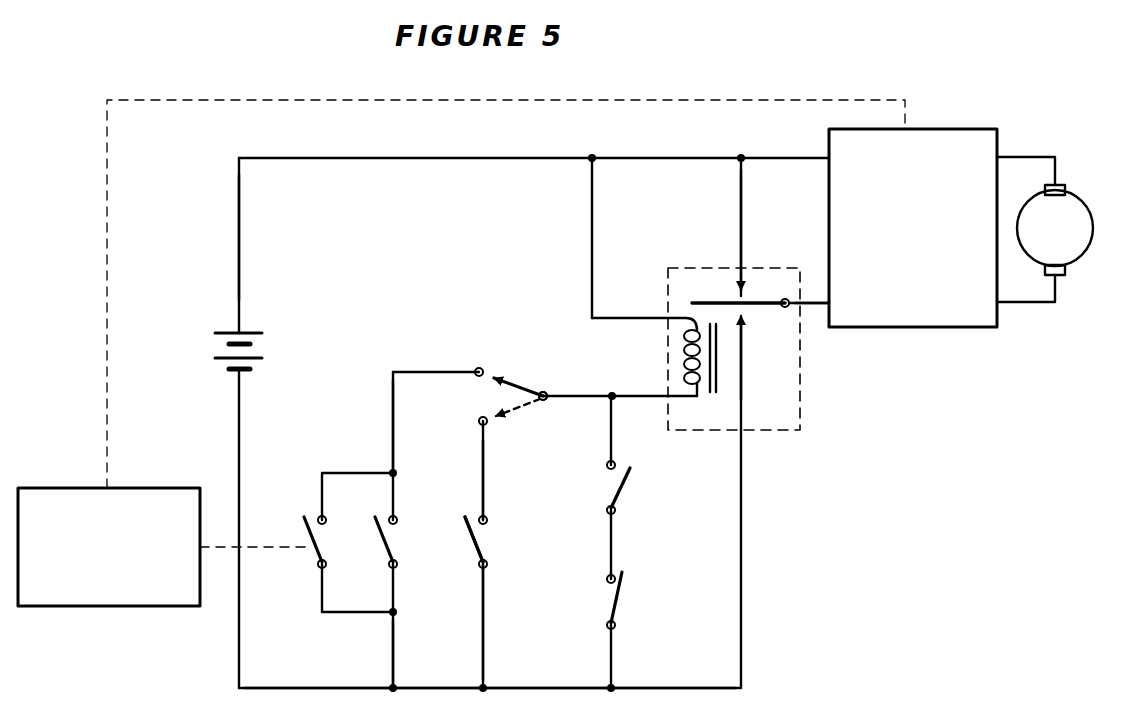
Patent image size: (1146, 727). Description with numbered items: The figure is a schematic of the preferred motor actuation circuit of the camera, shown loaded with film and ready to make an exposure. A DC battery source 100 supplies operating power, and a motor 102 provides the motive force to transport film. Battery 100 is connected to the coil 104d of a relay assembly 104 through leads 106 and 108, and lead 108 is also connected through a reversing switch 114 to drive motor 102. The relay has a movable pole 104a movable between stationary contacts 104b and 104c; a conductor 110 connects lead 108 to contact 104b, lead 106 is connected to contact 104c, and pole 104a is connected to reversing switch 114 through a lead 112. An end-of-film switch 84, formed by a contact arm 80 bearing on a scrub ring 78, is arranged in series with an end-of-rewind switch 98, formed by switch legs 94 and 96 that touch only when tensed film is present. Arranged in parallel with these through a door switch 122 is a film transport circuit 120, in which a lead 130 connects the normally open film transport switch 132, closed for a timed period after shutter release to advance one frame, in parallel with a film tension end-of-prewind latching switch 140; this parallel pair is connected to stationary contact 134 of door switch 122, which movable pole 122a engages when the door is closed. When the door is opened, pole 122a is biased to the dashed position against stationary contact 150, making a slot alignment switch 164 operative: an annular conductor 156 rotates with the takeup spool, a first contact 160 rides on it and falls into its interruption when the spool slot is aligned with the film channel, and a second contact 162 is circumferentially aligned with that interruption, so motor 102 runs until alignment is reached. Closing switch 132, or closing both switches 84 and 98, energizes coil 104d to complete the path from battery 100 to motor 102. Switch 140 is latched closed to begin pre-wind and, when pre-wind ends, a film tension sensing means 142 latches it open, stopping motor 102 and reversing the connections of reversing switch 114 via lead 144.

The scrub ring 78 is at (607, 466).
The contact arm 80 is at (608, 502).
The end-of-film switch 84 is at (638, 465).
The switch leg 94 is at (607, 624).
The switch leg 96 is at (607, 580).
The end-of-rewind switch 98 is at (638, 575).
The DC battery source 100 is at (263, 338).
The motor 102 is at (1067, 212).
The relay assembly 104 is at (800, 400).
The movable pole 104a is at (695, 300).
The stationary contact 104b is at (747, 299).
The stationary contact 104c is at (752, 326).
The coil 104d is at (683, 352).
The lead 106 is at (292, 689).
The lead 108 is at (239, 220).
The conductor 110 is at (741, 200).
The lead 112 is at (818, 306).
The reversing switch 114 is at (940, 129).
The film transport circuit 120 is at (386, 446).
The door switch 122 is at (521, 324).
The movable pole 122a is at (524, 386).
The lead 130 is at (394, 668).
The film transport switch 132 is at (410, 543).
The stationary contact 134 is at (477, 369).
The film tension end-of-prewind latching switch 140 is at (338, 545).
The film tension sensing means 142 is at (150, 608).
The lead 144 is at (190, 101).
The stationary contact 150 is at (479, 424).
The annular conductor 156 is at (474, 526).
The first contact 160 is at (483, 580).
The second contact 162 is at (487, 518).
The slot alignment switch 164 is at (500, 518).